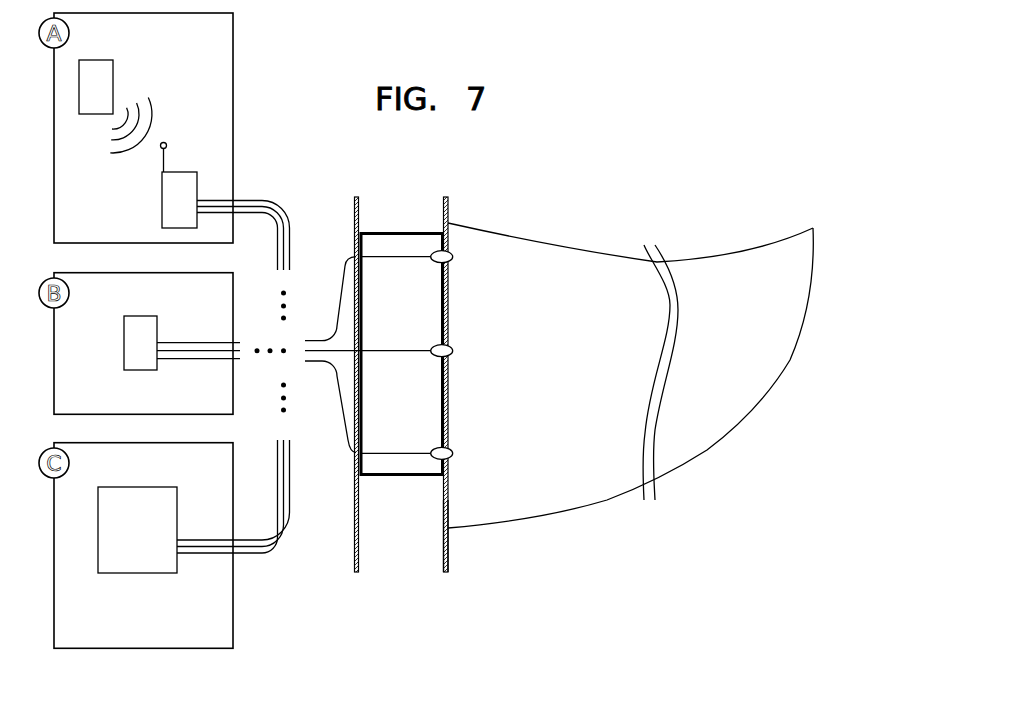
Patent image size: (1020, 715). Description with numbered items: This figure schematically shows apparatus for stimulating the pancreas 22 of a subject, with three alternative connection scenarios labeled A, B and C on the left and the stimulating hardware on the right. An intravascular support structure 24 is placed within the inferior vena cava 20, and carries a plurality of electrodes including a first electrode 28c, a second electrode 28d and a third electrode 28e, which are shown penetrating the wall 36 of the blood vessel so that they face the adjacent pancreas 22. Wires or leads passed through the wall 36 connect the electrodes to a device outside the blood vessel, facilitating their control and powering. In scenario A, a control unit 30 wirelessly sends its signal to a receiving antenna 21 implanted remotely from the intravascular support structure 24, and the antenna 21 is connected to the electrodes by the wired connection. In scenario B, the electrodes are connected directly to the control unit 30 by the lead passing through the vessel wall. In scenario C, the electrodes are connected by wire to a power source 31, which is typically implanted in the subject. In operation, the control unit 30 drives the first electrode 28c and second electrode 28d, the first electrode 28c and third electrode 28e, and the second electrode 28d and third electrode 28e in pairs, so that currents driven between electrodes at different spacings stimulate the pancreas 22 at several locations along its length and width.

The inferior vena cava 20 is at (448, 210).
The receiving antenna 21 is at (162, 204).
The pancreas 22 is at (678, 473).
The intravascular support structure 24 is at (400, 233).
The first electrode 28c is at (453, 257).
The second electrode 28d is at (453, 351).
The third electrode 28e is at (453, 454).
The control unit 30 is at (113, 65).
The power source 31 is at (177, 492).
The wall 36 is at (450, 549).